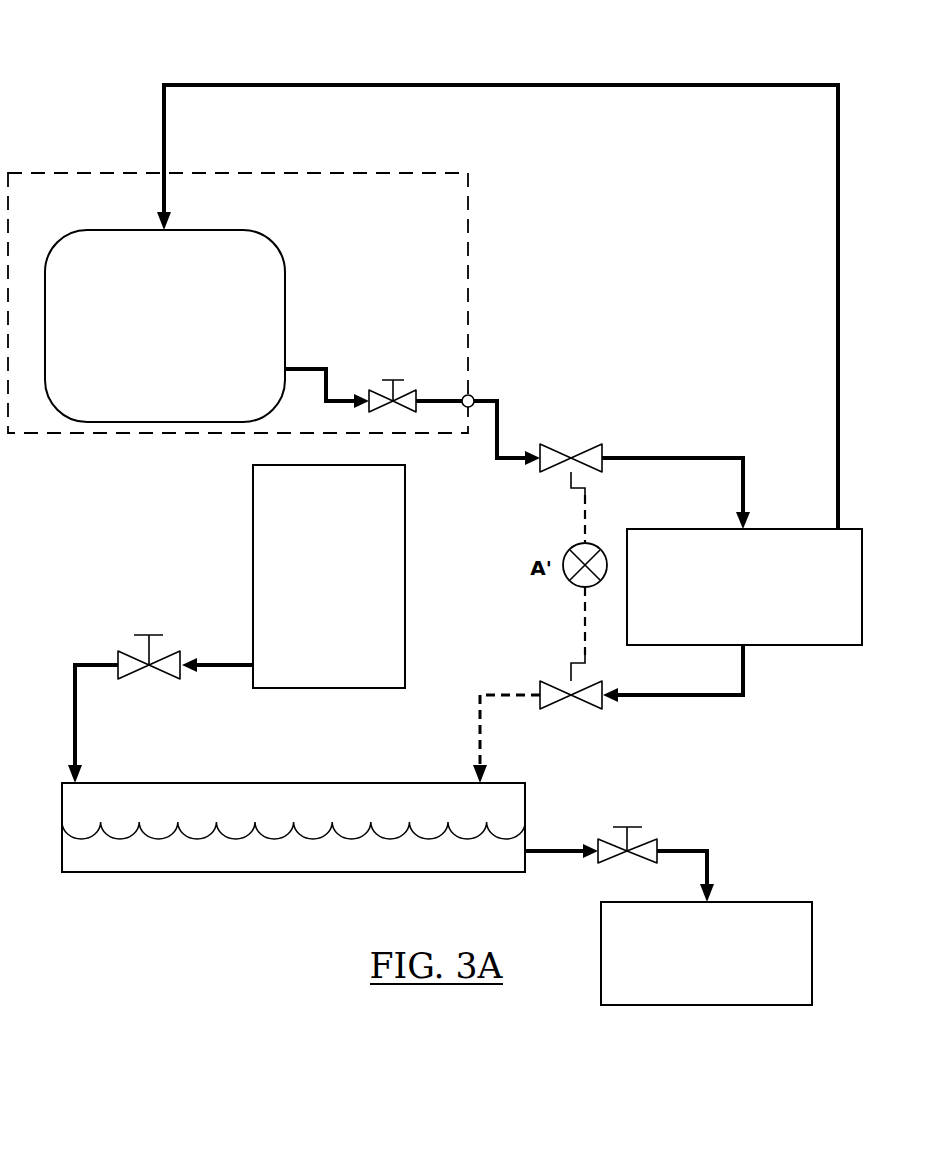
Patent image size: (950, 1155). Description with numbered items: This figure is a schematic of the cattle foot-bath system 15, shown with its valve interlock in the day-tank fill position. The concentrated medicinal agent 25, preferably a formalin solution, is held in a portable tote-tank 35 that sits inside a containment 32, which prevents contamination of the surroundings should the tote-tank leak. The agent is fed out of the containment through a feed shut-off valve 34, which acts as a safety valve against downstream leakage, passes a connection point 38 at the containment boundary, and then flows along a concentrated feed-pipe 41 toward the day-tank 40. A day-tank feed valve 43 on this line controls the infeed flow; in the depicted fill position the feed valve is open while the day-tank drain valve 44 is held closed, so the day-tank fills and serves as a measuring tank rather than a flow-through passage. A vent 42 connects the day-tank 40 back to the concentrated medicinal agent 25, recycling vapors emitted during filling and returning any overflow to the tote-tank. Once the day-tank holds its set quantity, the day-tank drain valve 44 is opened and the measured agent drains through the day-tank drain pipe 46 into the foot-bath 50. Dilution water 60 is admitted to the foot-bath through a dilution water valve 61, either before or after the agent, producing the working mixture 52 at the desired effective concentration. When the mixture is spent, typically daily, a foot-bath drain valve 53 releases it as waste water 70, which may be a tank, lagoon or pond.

The cattle foot-bath system 15 is at (110, 92).
The concentrated medicinal agent 25 is at (150, 364).
The containment 32 is at (315, 231).
The feed shut-off valve 34 is at (420, 390).
The tote-tank 35 is at (283, 321).
The connection point 38 is at (472, 396).
The day-tank 40 is at (730, 611).
The concentrated feed-pipe 41 is at (503, 437).
The vent 42 is at (835, 320).
The day-tank feed valve 43 is at (592, 445).
The day-tank drain valve 44 is at (572, 660).
The day-tank drain pipe 46 is at (672, 697).
The foot-bath 50 is at (328, 811).
The working mixture 52 is at (181, 862).
The foot-bath drain valve 53 is at (652, 840).
The dilution water 60 is at (315, 616).
The dilution water valve 61 is at (178, 652).
The waste water 70 is at (694, 978).